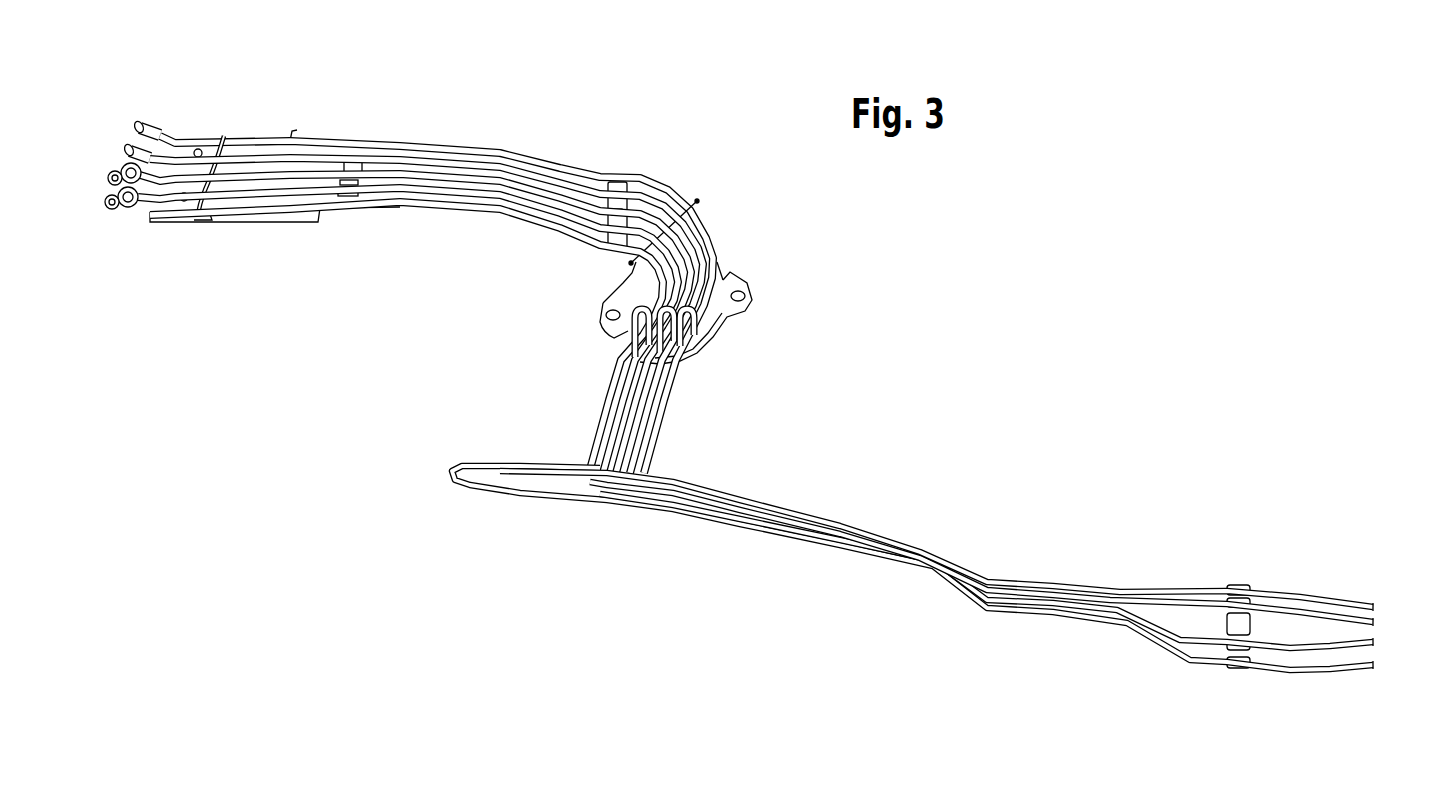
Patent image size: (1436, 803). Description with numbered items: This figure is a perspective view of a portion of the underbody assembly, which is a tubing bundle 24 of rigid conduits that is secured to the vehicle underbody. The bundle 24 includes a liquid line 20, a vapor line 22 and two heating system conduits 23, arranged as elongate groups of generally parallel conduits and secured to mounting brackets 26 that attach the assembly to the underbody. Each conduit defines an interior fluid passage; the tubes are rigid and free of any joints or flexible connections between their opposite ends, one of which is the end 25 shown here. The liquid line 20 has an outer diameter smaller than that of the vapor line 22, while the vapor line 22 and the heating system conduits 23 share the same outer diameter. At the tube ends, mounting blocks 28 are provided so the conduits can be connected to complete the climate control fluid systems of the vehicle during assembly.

The liquid line 20 is at (613, 377).
The vapor line 22 is at (617, 425).
The heating system conduits 23 is at (650, 387).
The tubing bundle 24 is at (878, 503).
The end 25 is at (162, 113).
The mounting bracket 26 is at (757, 292).
The mounting block 28 is at (123, 213).